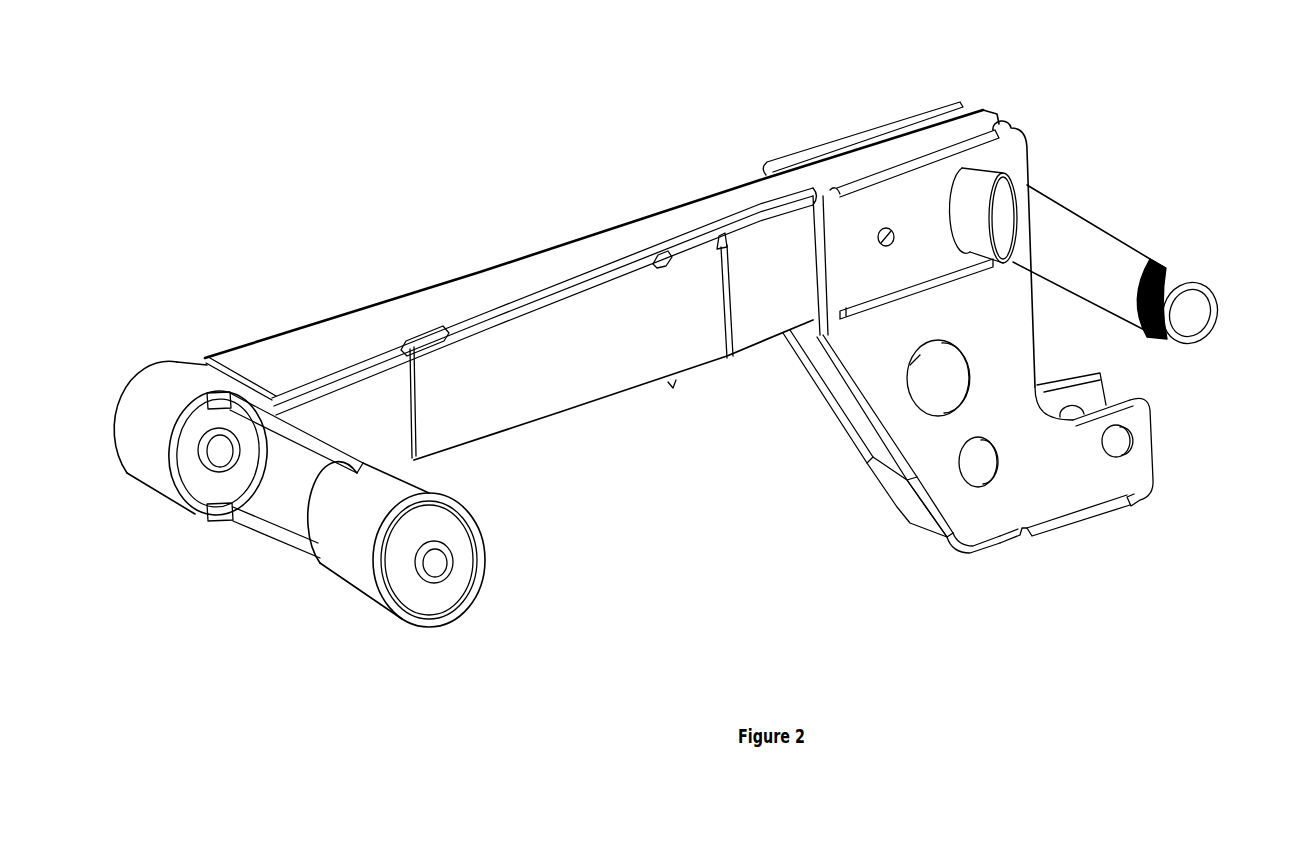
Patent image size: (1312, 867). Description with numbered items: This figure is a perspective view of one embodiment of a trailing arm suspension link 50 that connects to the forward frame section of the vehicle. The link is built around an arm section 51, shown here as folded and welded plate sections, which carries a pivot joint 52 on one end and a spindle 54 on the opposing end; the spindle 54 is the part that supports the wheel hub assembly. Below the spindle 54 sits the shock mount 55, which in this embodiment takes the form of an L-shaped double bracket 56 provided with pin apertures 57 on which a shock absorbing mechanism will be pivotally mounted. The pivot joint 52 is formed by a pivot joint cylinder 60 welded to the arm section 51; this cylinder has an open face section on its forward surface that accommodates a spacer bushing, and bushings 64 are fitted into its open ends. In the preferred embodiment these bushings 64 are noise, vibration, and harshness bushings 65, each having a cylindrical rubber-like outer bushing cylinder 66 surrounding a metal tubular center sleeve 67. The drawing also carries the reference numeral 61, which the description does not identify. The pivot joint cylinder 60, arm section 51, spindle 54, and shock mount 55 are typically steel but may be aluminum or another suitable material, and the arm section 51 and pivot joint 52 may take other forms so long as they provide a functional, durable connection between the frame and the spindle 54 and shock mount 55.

The trailing arm suspension link 50 is at (465, 191).
The arm section 51 is at (587, 233).
The pivot joint 52 is at (130, 371).
The spindle 54 is at (1116, 235).
The shock mount 55 is at (1177, 437).
The L-shaped double bracket 56 is at (1140, 395).
The pin apertures 57 is at (1127, 448).
The pivot joint cylinder 60 is at (143, 427).
The link arm 61 is at (287, 503).
The bushings 64 is at (487, 530).
The NVH bushings 65 is at (467, 560).
The outer bushing cylinder 66 is at (450, 588).
The center sleeve 67 is at (430, 580).